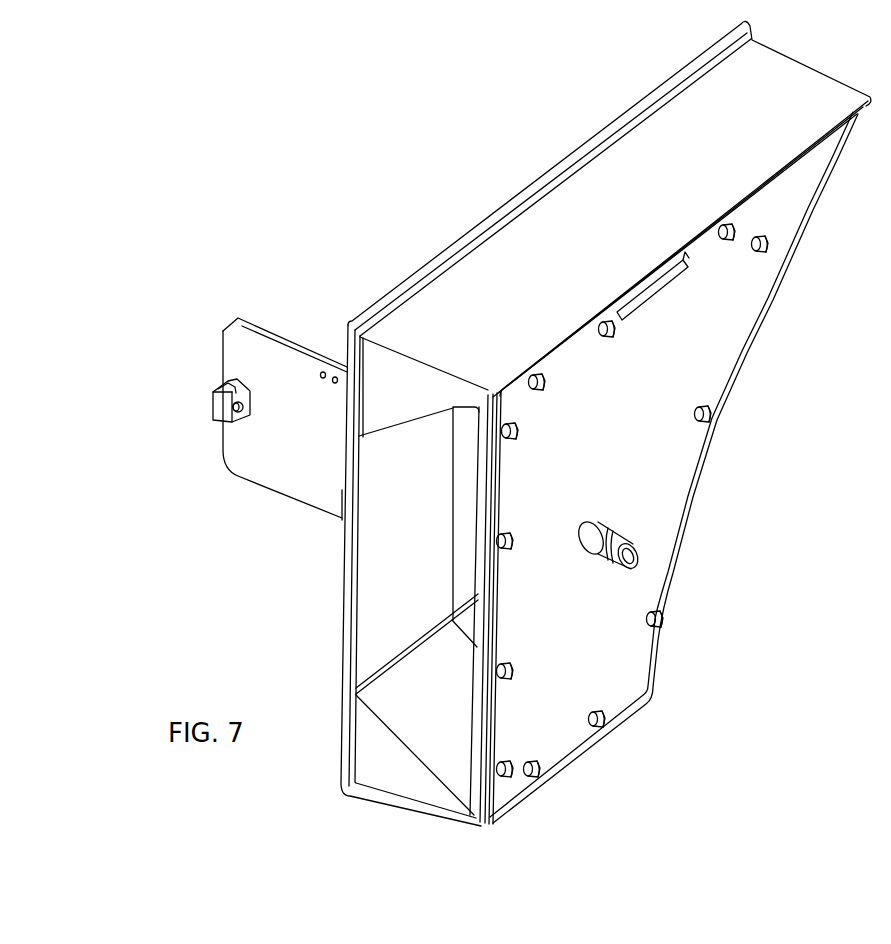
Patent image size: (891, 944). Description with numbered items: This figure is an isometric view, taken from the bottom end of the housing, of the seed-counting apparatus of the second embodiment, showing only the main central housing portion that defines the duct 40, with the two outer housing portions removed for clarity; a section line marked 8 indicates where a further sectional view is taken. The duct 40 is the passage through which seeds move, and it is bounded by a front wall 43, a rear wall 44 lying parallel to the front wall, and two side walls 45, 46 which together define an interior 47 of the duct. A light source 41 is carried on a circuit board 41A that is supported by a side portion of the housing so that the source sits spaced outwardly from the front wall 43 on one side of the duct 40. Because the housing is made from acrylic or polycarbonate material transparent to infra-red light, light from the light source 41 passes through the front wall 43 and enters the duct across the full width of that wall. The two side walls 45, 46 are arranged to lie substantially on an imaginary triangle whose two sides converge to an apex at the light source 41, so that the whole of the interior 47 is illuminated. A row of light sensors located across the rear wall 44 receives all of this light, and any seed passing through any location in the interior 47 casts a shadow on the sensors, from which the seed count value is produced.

The section line 8- 8 is at (222, 352).
The duct 40 is at (387, 571).
The light source 41 is at (222, 408).
The circuit board 41A is at (293, 378).
The front wall 43 is at (392, 459).
The rear wall 44 is at (490, 492).
The side wall 45 is at (440, 412).
The side wall 46 is at (427, 768).
The interior 47 is at (417, 642).